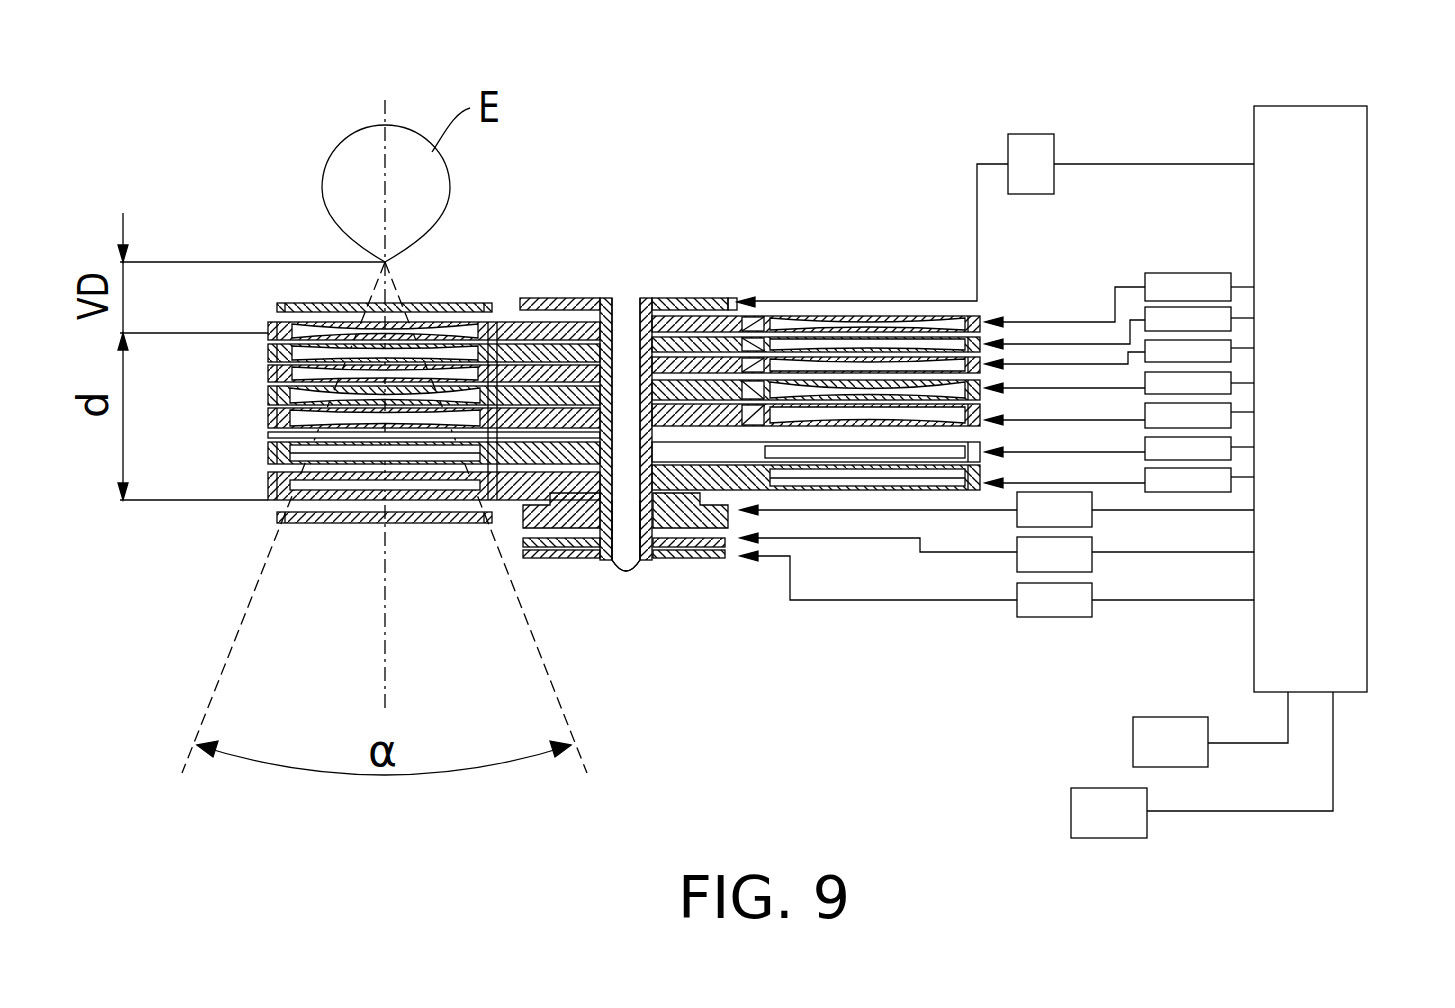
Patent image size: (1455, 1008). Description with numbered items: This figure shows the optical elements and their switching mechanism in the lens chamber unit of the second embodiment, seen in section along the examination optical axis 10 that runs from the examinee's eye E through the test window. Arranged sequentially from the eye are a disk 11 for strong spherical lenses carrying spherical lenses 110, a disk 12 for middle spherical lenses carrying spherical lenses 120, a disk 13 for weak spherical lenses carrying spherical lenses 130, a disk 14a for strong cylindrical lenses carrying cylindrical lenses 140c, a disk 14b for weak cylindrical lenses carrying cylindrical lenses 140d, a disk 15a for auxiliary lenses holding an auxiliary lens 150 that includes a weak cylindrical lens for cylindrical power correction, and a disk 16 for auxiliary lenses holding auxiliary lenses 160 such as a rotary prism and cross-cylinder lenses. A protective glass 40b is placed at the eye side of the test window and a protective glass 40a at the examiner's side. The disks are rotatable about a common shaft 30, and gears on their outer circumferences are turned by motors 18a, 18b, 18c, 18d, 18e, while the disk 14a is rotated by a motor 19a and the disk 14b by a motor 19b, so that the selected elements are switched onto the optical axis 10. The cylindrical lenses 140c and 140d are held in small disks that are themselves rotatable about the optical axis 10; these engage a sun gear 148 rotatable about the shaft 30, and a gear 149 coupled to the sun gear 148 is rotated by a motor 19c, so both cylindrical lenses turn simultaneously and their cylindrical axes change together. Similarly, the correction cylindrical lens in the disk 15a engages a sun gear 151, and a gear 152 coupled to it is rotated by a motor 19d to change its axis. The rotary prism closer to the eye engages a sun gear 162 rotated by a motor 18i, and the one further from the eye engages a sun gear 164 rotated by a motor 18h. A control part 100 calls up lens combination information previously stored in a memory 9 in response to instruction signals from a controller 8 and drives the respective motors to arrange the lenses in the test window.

The controller 8 is at (1071, 823).
The memory 9 is at (1172, 717).
The examination optical axis 10 is at (383, 650).
The disk for strong spherical lenses 11 is at (378, 278).
The disk for middle spherical lenses 12 is at (378, 272).
The disk for weak spherical lenses 13 is at (378, 273).
The disk for strong cylindrical lenses 14a is at (404, 306).
The disk for weak cylindrical lenses 14b is at (370, 500).
The disk for auxiliary lenses 15a is at (372, 522).
The disk for auxiliary lenses 16 is at (275, 493).
The shaft 30 is at (623, 299).
The protective glass 40a is at (308, 524).
The protective glass 40b is at (440, 302).
The control part 100 is at (1315, 106).
The spherical lenses with strong power 110 is at (300, 334).
The spherical lenses with middle power 120 is at (315, 352).
The spherical lenses with weak power 130 is at (333, 372).
The cylindrical lenses with strong power 140c is at (470, 340).
The cylindrical lenses with weak power 140d is at (410, 426).
The sun gear 148 is at (530, 405).
The gear 149 is at (673, 300).
The auxiliary lens 150 is at (484, 524).
The sun gear 151 is at (618, 505).
The gear 152 is at (667, 552).
The auxiliary lenses 160 is at (355, 462).
The sun gear 162 is at (713, 508).
The sun gear 164 is at (558, 530).
The motor 18a is at (1195, 273).
The motor 18b is at (1145, 313).
The motor 18c is at (1235, 346).
The motor 18d is at (1235, 449).
The motor 18e is at (1235, 481).
The motor 18h is at (1017, 523).
The motor 18i is at (1017, 571).
The motor 19a is at (1235, 388).
The motor 19b is at (1235, 413).
The position sensor 19c is at (1048, 134).
The motor 19d is at (1037, 617).